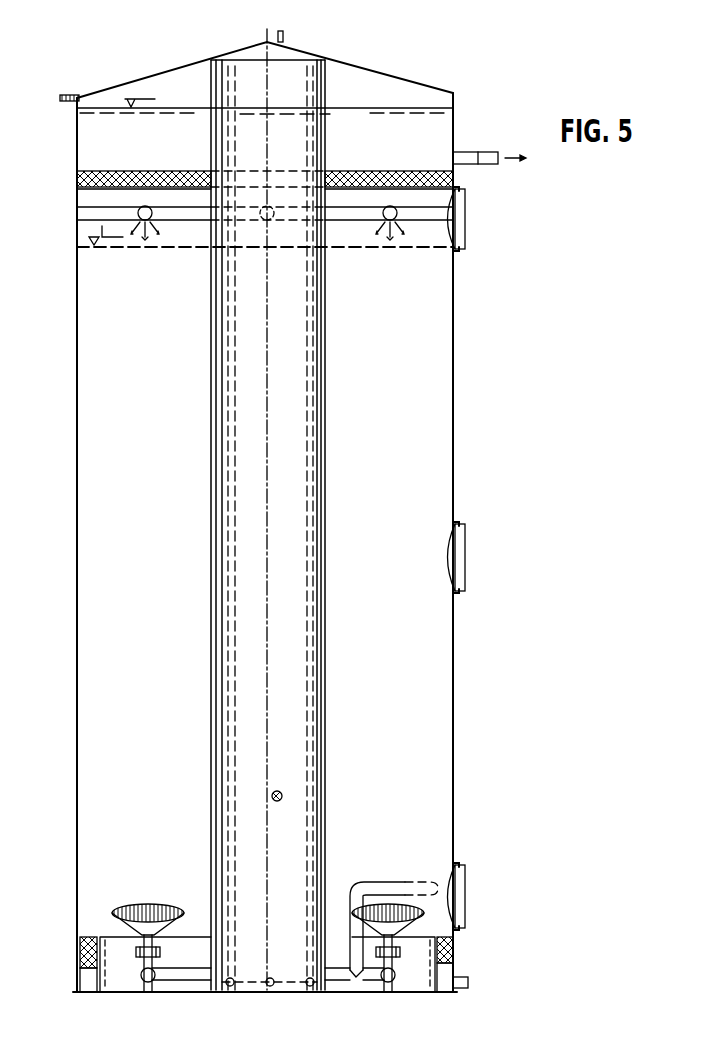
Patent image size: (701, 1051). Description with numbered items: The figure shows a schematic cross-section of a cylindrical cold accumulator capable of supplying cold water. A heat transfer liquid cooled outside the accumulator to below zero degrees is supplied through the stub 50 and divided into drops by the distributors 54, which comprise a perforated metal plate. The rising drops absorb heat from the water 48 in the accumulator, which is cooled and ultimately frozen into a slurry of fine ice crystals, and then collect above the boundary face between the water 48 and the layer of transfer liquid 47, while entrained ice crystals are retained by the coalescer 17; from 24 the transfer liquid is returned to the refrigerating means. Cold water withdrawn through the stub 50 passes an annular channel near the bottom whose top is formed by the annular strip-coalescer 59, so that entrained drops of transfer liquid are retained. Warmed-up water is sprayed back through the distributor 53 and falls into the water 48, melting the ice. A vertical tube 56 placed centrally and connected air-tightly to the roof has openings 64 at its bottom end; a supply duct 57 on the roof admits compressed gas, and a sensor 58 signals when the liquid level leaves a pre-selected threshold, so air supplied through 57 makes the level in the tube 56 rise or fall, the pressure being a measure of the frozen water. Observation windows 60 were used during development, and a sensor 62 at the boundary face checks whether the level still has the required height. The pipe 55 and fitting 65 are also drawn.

The coalescer 17 is at (80, 181).
The transfer liquid return outlet 24 is at (511, 166).
The layer of transfer liquid 47 is at (100, 143).
The water 48 is at (135, 486).
The stub 50 is at (470, 982).
The distributor 53 is at (136, 213).
The distributor 54 is at (138, 923).
The feed pipe 55 is at (385, 888).
The tube 56 is at (225, 600).
The supply duct 57 is at (284, 33).
The sensor 58 is at (146, 99).
The annular strip-coalescer 59 is at (80, 952).
The observation window 60 is at (460, 226).
The sensor 62 is at (102, 226).
The opening 64 is at (306, 986).
The fitting 65 is at (62, 95).